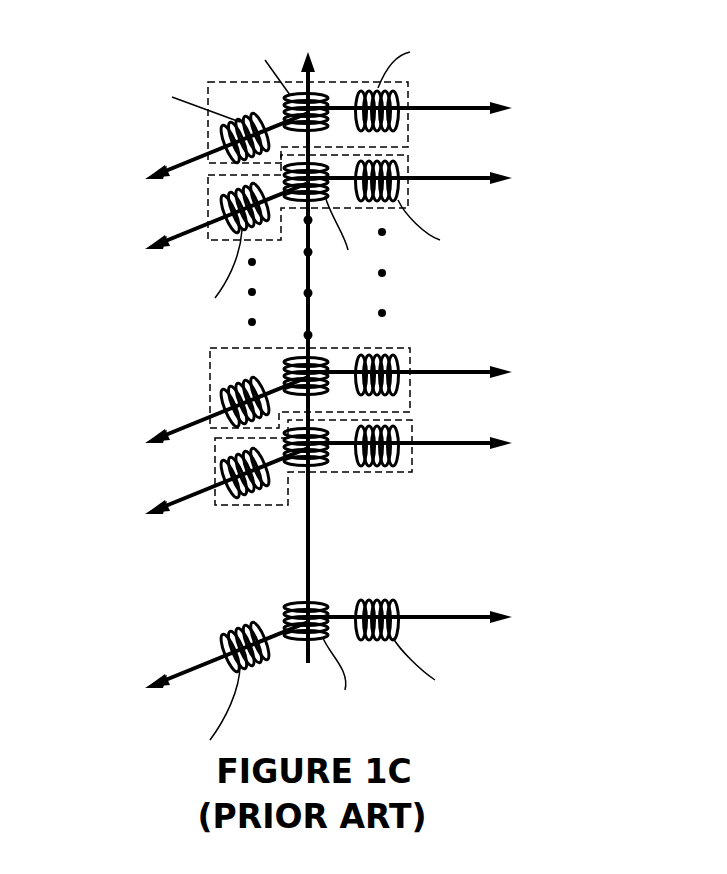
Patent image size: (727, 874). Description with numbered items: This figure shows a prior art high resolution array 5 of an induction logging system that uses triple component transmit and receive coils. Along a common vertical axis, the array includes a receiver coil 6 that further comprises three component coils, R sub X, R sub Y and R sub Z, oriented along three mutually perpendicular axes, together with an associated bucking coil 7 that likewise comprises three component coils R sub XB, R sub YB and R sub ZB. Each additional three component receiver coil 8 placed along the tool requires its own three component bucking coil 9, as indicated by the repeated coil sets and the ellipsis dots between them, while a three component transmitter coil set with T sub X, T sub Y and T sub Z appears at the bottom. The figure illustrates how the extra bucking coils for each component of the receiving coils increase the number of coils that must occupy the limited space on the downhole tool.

The high resolution array 5 is at (100, 60).
The receiver coil 6 is at (410, 97).
The bucking coil 7 is at (208, 188).
The additional three component receiver coil 8 is at (413, 355).
The three component bucking coil 9 is at (415, 475).